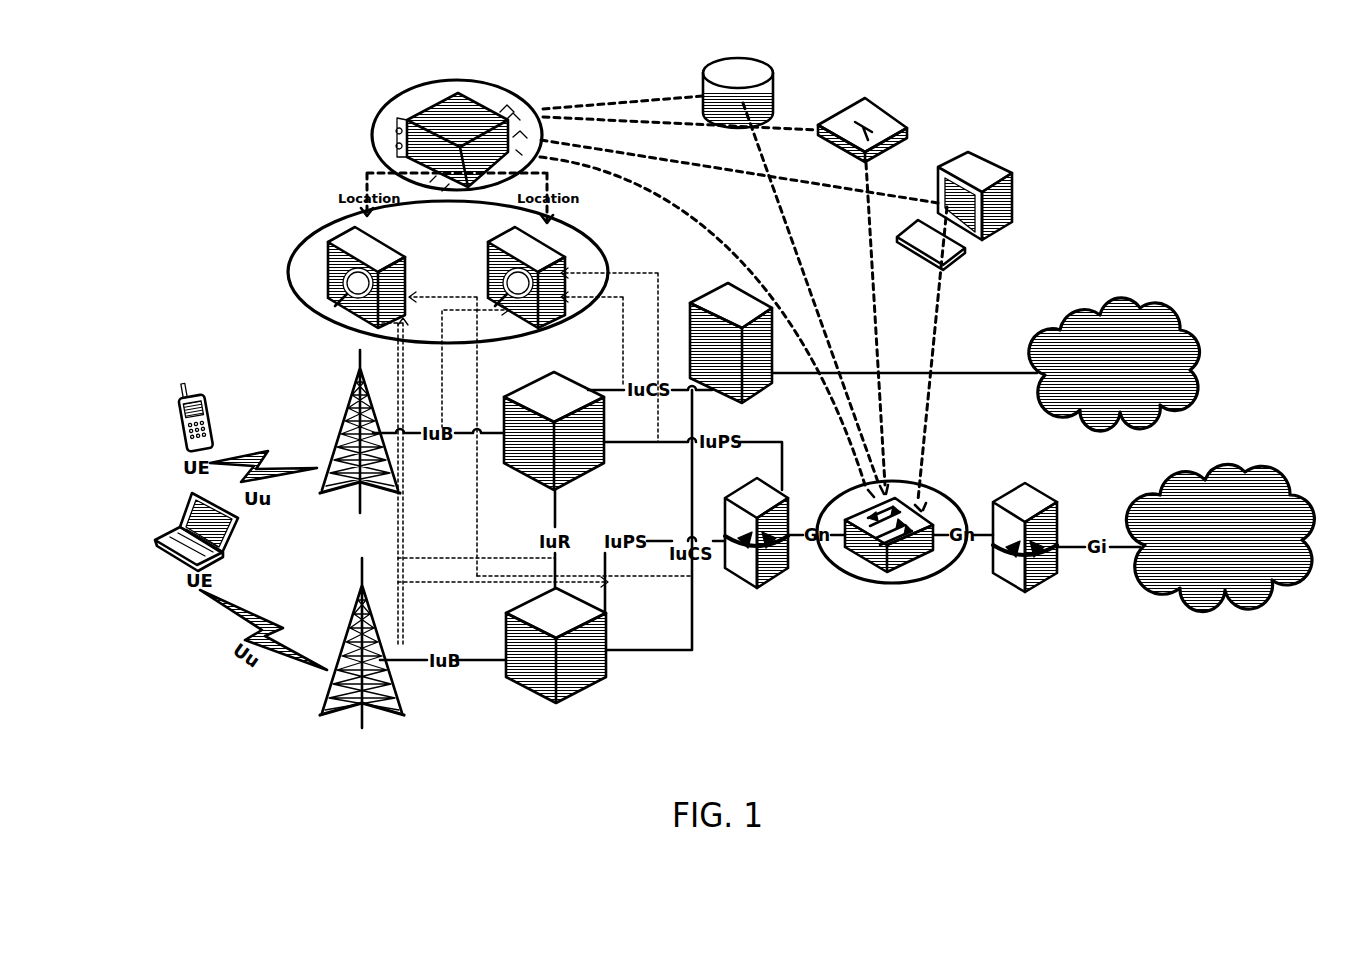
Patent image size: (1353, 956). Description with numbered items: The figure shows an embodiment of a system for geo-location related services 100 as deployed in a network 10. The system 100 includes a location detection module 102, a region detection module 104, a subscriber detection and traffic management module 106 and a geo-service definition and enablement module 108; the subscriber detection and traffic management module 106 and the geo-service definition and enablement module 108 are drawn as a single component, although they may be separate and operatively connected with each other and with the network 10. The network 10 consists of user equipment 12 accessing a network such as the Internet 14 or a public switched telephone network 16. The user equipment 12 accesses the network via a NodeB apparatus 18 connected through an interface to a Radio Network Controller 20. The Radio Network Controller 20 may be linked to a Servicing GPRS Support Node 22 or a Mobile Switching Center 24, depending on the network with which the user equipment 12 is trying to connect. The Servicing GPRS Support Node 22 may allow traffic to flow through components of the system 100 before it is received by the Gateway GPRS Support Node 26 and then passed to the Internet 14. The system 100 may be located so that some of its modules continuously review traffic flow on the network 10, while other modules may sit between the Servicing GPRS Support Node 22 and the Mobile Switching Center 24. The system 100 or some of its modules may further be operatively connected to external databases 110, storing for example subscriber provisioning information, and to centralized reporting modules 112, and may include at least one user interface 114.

The network 10 is at (1030, 98).
The system for geo-location related services 100 is at (279, 88).
The user equipment 12 is at (210, 414).
The Internet 14 is at (1205, 593).
The public switched telephone network 16 is at (1115, 404).
The NodeB apparatus 18 is at (345, 497).
The Radio Network Controller 20 is at (590, 455).
The Servicing GPRS Support Node 22 is at (768, 572).
The Mobile Switching Center 24 is at (757, 383).
The Gateway GPRS Support Node 26 is at (1053, 560).
The location detection module 102 is at (338, 262).
The region detection module 104 is at (530, 100).
The subscriber detection and traffic management module 106 is at (930, 523).
The geo-service definition and enablement module 108 is at (862, 552).
The external databases 110 is at (757, 66).
The centralized reporting modules 112 is at (887, 115).
The user interface 114 is at (1005, 203).